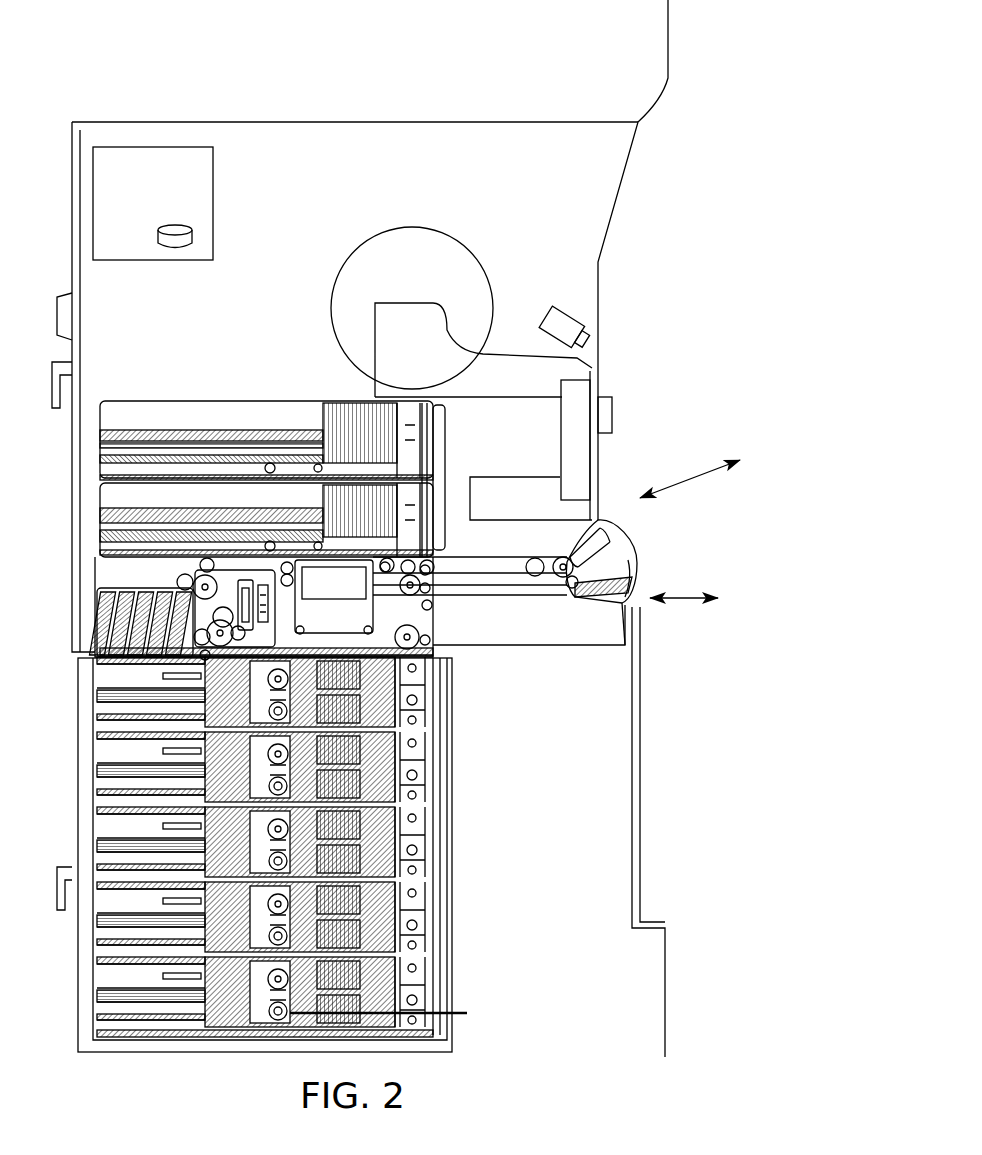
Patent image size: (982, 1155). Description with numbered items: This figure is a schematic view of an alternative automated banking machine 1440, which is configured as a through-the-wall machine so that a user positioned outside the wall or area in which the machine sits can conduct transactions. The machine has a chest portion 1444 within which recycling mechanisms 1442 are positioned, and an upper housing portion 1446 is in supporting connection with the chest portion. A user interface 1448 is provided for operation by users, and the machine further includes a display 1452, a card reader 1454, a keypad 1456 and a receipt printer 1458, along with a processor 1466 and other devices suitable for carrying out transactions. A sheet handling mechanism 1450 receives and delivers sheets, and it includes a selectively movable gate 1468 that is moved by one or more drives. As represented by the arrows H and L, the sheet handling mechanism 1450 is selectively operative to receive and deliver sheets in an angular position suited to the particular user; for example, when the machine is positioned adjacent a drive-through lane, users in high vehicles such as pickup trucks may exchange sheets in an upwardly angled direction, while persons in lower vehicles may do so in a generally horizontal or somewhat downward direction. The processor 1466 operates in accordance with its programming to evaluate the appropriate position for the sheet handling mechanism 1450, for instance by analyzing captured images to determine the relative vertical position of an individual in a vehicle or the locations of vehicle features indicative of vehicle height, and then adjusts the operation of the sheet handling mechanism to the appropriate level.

The automated banking machine 1440 is at (486, 958).
The recycling mechanisms 1442 is at (425, 748).
The chest portion 1444 is at (452, 832).
The upper housing portion 1446 is at (232, 104).
The user interface 1448 is at (632, 325).
The sheet handling mechanism 1450 is at (591, 607).
The display 1452 is at (600, 470).
The card reader 1454 is at (577, 514).
The keypad 1456 is at (613, 418).
The receipt printer 1458 is at (465, 256).
The processor 1466 is at (190, 202).
The selectively movable gate 1468 is at (640, 568).
The arrow H is at (704, 479).
The arrow L is at (684, 624).